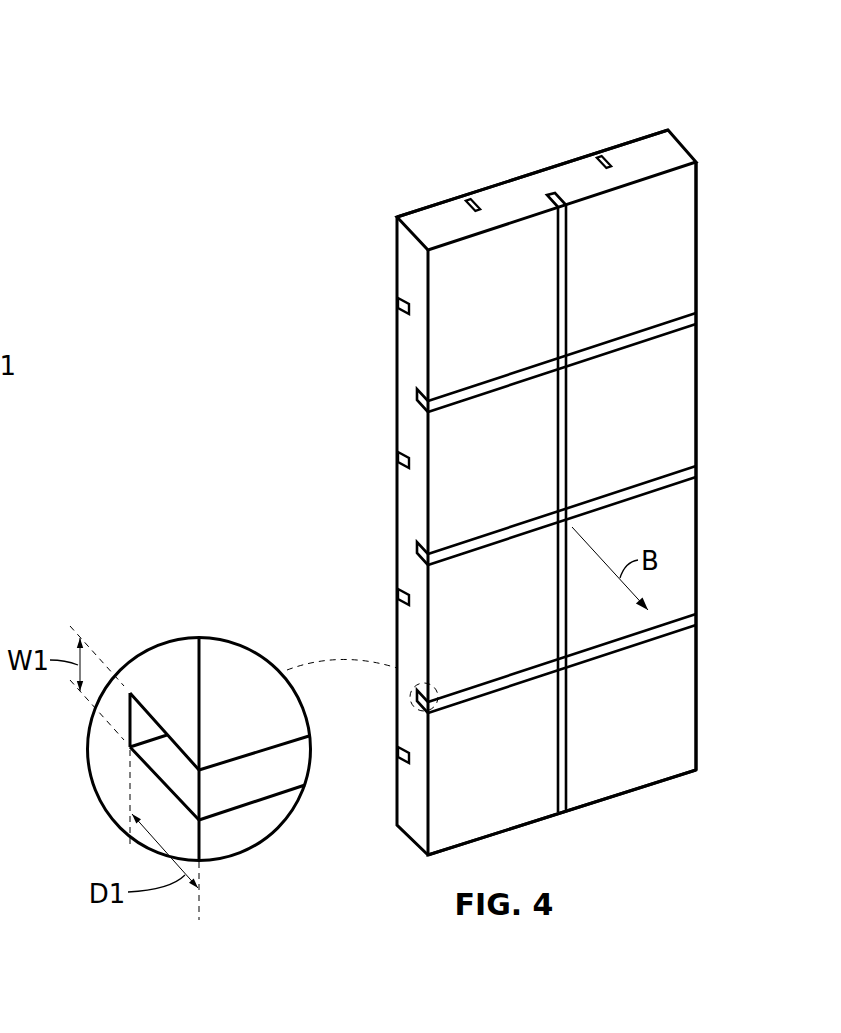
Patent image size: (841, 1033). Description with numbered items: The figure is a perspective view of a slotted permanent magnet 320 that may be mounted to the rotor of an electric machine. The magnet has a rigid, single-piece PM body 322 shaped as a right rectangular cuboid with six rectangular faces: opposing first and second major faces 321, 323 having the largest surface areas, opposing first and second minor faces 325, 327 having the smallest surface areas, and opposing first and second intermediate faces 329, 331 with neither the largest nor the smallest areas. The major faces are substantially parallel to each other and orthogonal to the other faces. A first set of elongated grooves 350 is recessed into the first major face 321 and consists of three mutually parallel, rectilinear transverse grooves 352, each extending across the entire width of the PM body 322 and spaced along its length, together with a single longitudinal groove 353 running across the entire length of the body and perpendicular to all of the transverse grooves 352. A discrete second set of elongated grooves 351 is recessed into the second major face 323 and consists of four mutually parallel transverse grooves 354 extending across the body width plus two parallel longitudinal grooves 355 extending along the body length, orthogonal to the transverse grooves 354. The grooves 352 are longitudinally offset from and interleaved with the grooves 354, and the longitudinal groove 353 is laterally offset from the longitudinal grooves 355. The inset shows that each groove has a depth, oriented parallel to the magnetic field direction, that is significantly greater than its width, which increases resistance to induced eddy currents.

The slotted permanent magnet 320 is at (350, 78).
The first major face 321 is at (673, 188).
The PM body 322 is at (427, 222).
The second major face 323 is at (628, 142).
The first minor face 325 is at (653, 158).
The second minor face 327 is at (653, 792).
The first intermediate face 329 is at (398, 515).
The second intermediate face 331 is at (698, 430).
The first set of elongated grooves 350 is at (735, 522).
The second set of elongated grooves 351 is at (333, 370).
The transverse grooves 352 is at (685, 328).
The longitudinal groove 353 is at (567, 727).
The transverse grooves 354 is at (399, 305).
The longitudinal grooves 355 is at (467, 197).